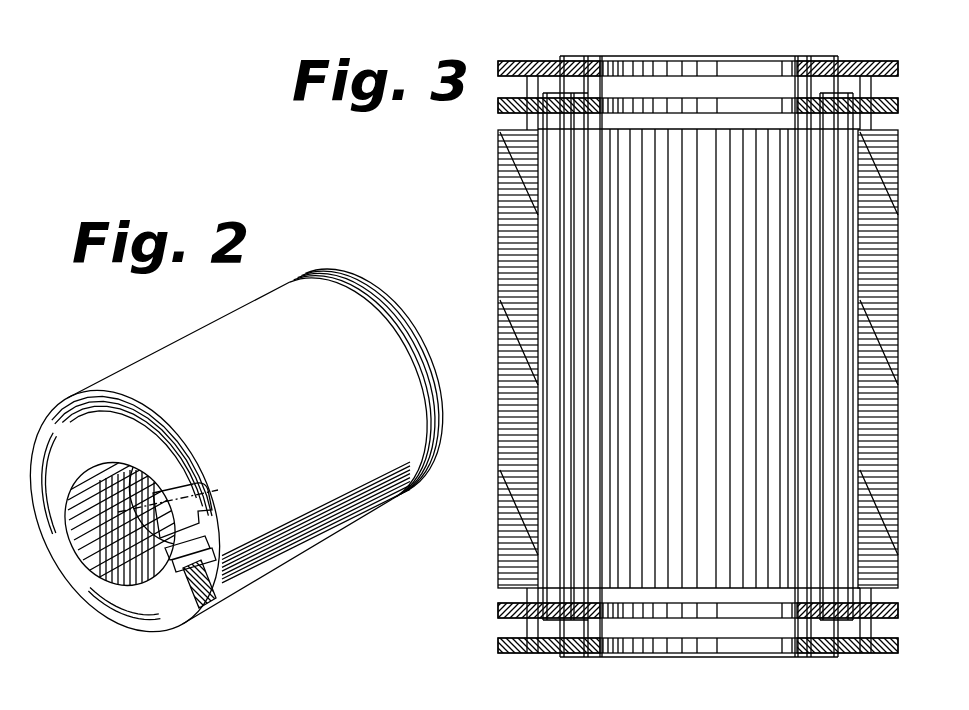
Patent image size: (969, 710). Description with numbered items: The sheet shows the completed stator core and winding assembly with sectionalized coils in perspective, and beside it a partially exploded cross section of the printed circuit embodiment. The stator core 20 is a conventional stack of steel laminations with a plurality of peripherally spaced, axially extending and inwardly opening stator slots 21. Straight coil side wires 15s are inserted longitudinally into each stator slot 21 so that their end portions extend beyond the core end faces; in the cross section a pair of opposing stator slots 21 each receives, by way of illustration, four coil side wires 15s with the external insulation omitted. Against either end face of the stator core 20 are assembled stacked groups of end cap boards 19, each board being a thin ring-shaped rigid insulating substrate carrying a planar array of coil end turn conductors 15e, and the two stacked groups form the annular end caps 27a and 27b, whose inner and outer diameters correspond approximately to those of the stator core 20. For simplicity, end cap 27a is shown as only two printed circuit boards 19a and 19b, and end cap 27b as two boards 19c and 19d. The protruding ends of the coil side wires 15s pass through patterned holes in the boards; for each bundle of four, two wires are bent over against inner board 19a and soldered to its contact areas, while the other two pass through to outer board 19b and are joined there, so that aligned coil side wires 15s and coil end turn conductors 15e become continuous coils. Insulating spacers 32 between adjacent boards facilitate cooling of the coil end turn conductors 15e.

In FIG. 2, the end cap board 19 is at (423, 378).
In FIG. 3, the inner printed circuit board 19a is at (893, 98).
In FIG. 3, the outer printed circuit board 19b is at (873, 61).
In FIG. 3, the printed circuit board 19c is at (786, 612).
In FIG. 3, the printed circuit board 19d is at (766, 645).
In FIG. 3, the stator core 20 is at (698, 359).
In FIG. 2, the stator core 20 is at (330, 520).
In FIG. 3, the stator slot 21 is at (595, 215).
In FIG. 2, the stator slot 21 is at (207, 497).
In FIG. 3, the coil side wire 15s is at (588, 332).
In FIG. 2, the coil side wire 15s is at (273, 567).
In FIG. 2, the coil end turn conductor 15e is at (92, 573).
In FIG. 3, the annular end cap 27a is at (481, 93).
In FIG. 2, the annular end cap 27a is at (148, 636).
In FIG. 3, the annular end cap 27b is at (500, 657).
In FIG. 2, the annular end cap 27b is at (408, 332).
In FIG. 3, the insulating spacer 32 is at (528, 118).